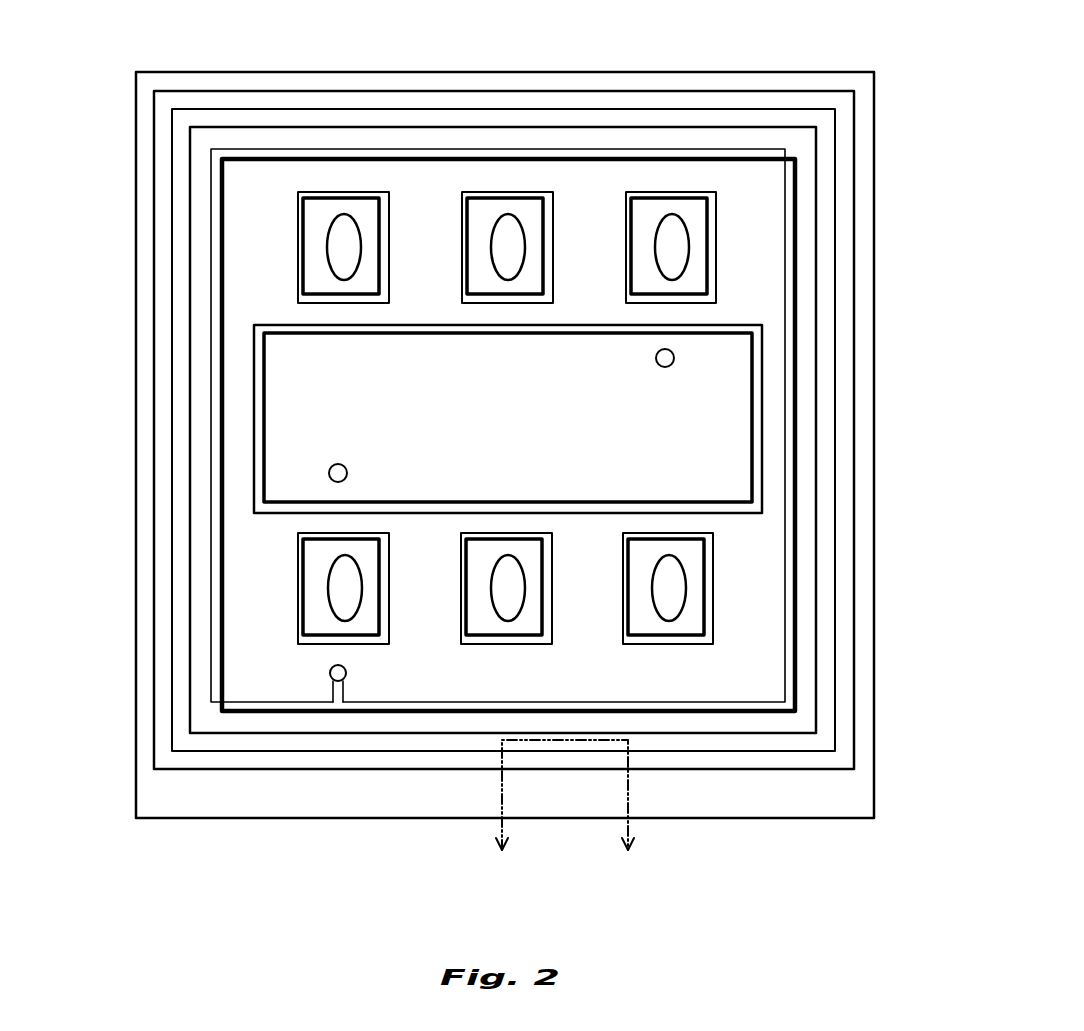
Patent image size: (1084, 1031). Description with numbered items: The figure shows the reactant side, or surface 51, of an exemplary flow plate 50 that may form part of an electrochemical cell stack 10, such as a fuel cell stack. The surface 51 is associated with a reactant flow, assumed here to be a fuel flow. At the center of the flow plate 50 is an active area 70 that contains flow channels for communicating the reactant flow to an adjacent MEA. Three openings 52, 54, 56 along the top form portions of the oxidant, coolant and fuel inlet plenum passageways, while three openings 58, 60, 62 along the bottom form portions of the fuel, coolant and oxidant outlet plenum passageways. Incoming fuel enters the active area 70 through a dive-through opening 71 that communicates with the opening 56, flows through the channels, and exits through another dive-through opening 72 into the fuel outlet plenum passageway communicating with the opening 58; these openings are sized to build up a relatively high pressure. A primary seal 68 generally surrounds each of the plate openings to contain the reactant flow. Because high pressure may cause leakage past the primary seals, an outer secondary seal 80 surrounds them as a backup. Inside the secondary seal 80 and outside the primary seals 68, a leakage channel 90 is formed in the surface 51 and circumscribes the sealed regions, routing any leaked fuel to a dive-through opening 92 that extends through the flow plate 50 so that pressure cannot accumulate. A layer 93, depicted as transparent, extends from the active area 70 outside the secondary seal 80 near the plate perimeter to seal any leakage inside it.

The electrochemical cell stack 10 is at (568, 812).
The flow plate 50 is at (667, 68).
The surface 51 is at (828, 799).
The opening 52 is at (349, 228).
The opening 54 is at (514, 228).
The opening 56 is at (678, 228).
The opening 58 is at (352, 570).
The opening 60 is at (515, 570).
The opening 62 is at (677, 570).
The primary seal 68 is at (297, 245).
The active area 70 is at (512, 422).
The opening 71 is at (668, 367).
The opening 72 is at (345, 466).
The secondary seal 80 is at (692, 752).
The leakage channel 90 is at (495, 703).
The opening 92 is at (346, 670).
The layer 93 is at (233, 778).